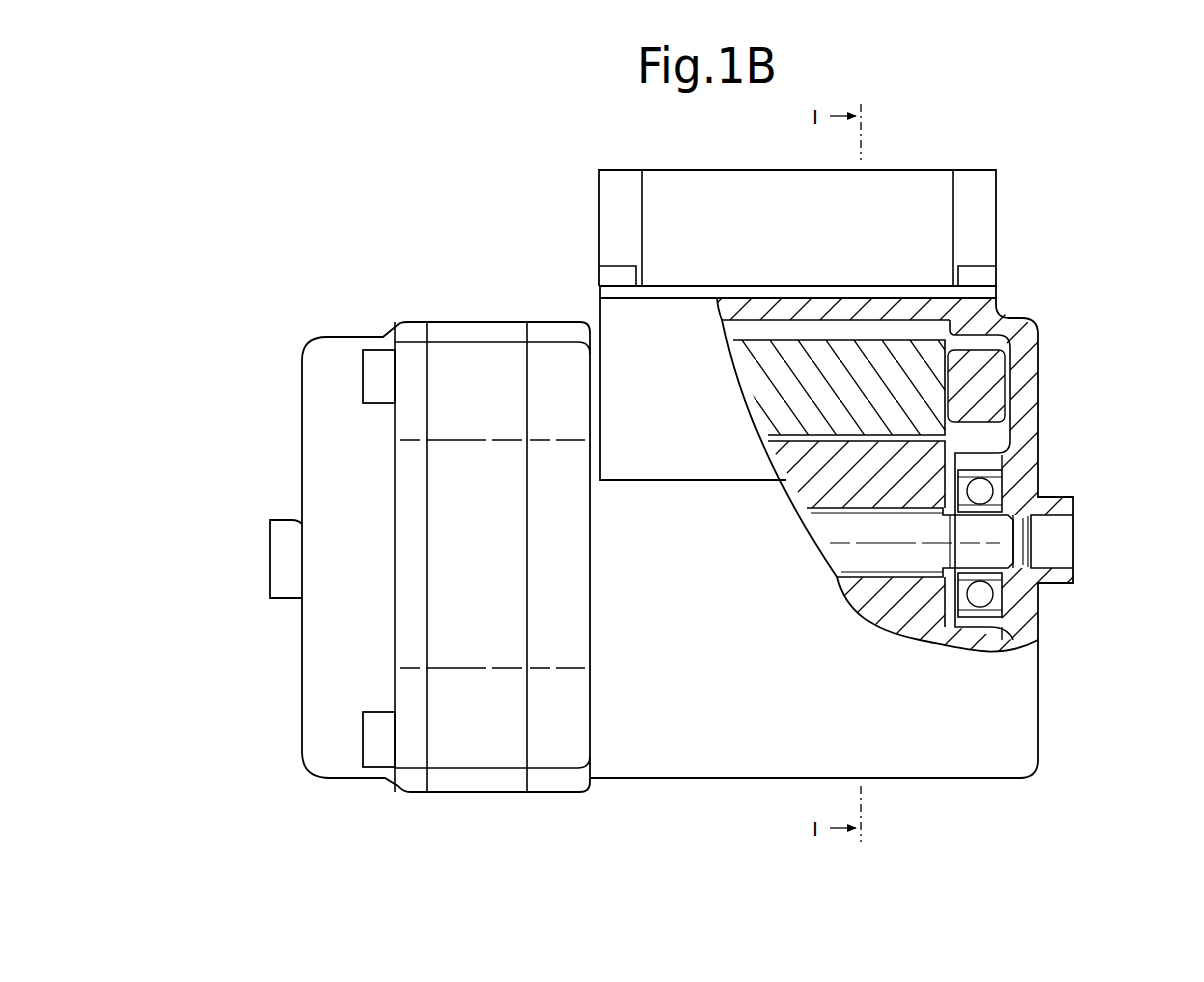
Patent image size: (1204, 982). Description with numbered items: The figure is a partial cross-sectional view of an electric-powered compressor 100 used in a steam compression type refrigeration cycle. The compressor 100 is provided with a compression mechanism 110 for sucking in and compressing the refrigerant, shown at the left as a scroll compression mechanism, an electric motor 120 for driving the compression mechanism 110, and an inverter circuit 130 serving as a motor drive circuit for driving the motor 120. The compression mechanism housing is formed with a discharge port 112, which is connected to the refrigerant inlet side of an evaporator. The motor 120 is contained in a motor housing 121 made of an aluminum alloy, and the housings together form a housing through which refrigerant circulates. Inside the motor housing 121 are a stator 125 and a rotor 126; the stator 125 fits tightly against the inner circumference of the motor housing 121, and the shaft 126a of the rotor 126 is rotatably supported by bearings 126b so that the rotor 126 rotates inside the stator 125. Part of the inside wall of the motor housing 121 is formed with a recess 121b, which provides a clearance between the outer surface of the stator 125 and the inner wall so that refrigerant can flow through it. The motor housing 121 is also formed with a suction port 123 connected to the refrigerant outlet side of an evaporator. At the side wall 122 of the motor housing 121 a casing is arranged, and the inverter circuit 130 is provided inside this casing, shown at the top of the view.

The electric-powered compressor 100 is at (550, 207).
The compression mechanism 110 is at (468, 355).
The discharge port 112 is at (286, 555).
The electric motor 120 is at (955, 745).
The motor housing 121 is at (1025, 392).
The recess 121b is at (933, 312).
The side wall 122 is at (955, 326).
The suction port 123 is at (1060, 548).
The stator 125 is at (925, 370).
The rotor 126 is at (925, 458).
The shaft 126a is at (990, 525).
The bearings 126b is at (1003, 623).
The inverter circuit 130 is at (935, 206).